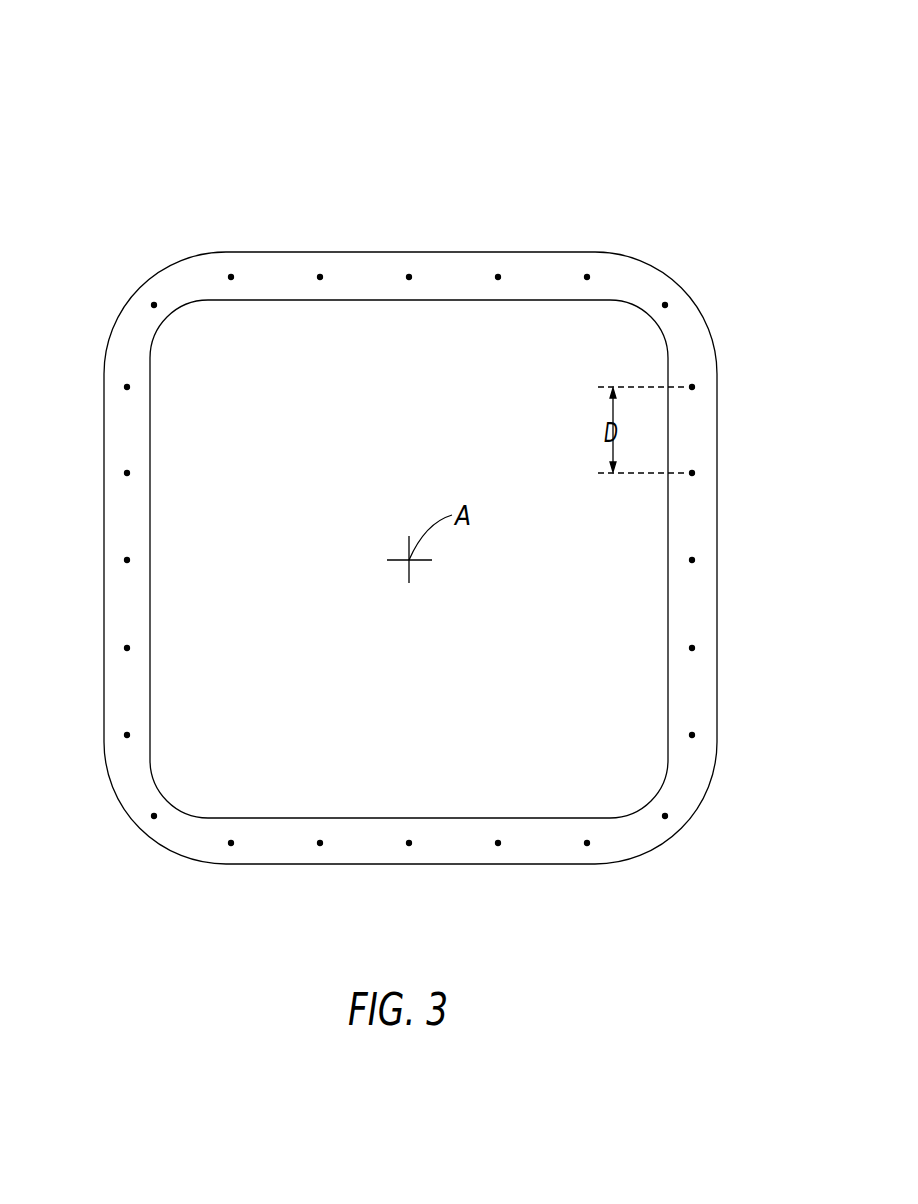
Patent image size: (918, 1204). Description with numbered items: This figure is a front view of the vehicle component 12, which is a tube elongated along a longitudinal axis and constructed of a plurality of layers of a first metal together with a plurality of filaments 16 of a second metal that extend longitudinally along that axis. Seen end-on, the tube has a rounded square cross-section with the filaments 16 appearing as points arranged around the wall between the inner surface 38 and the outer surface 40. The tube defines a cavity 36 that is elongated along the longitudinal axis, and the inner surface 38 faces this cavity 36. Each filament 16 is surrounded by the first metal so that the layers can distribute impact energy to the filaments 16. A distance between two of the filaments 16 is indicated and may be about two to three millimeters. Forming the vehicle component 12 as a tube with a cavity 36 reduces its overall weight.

The vehicle component 12 is at (397, 469).
The filament 16 is at (231, 277).
The cavity 36 is at (613, 367).
The inner surface 38 is at (150, 515).
The outer surface 40 is at (103, 425).